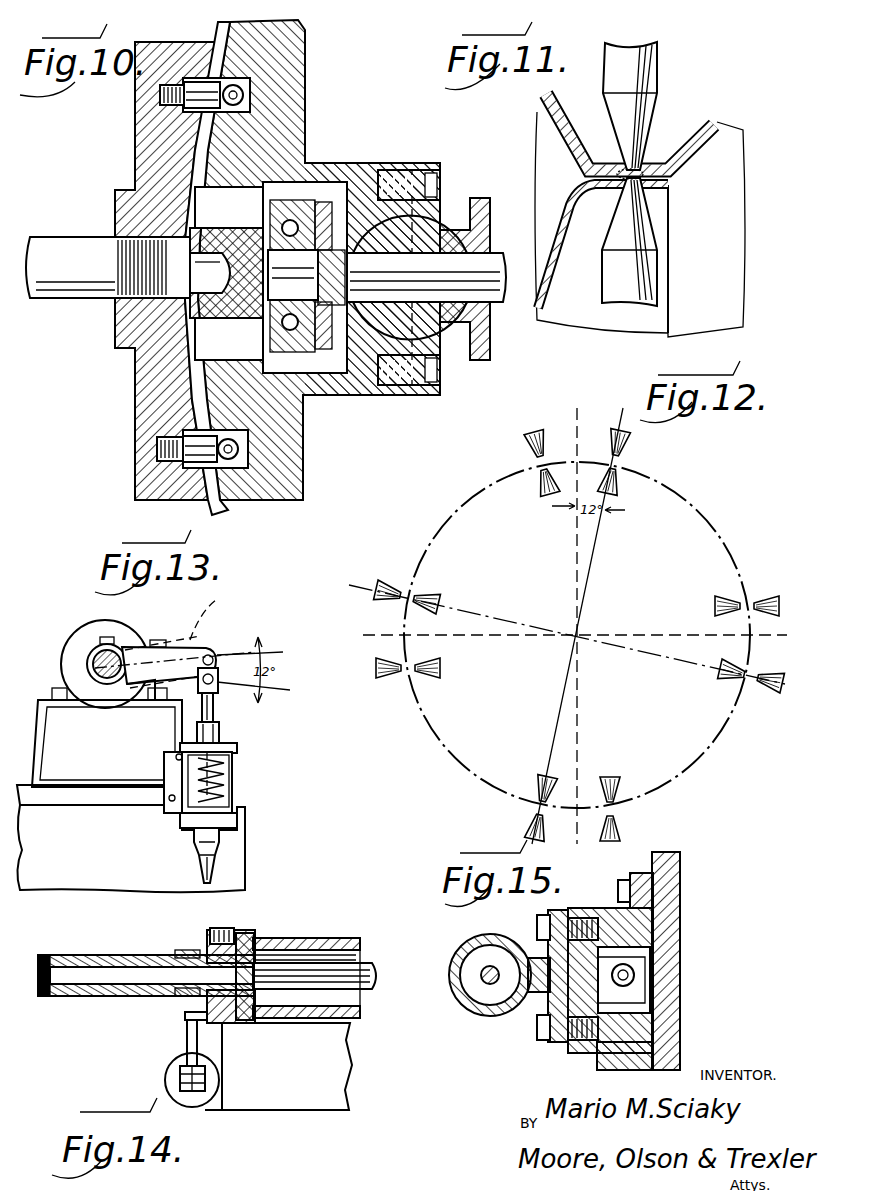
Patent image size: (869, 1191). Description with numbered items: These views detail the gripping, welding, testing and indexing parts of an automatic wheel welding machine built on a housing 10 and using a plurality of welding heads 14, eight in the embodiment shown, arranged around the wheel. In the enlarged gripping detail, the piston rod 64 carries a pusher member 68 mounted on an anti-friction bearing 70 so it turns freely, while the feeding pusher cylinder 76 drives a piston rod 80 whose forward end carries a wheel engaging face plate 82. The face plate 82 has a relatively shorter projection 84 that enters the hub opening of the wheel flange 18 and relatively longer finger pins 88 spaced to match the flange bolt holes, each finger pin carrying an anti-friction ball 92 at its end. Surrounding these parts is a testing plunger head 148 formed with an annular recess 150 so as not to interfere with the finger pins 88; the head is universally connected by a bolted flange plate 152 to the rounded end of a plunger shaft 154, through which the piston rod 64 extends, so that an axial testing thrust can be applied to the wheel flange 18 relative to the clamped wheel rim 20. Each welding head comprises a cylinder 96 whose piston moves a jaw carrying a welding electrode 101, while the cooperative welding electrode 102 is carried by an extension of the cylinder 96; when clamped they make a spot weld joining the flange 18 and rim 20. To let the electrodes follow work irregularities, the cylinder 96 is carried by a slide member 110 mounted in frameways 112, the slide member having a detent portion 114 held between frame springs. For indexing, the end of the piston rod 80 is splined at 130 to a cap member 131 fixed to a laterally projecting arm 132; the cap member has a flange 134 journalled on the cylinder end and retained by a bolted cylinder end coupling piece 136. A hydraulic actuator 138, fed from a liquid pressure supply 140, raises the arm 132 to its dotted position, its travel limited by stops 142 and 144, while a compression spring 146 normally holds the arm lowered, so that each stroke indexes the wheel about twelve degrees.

In FIG. 15, the housing 10 is at (665, 940).
In FIG. 12, the welding heads 14 is at (608, 430).
In FIG. 10, the wheel flange 18 is at (195, 152).
In FIG. 12, the wheel flange 18 is at (590, 377).
In FIG. 11, the wheel rim 20 is at (720, 130).
In FIG. 10, the piston rod 64 is at (495, 293).
In FIG. 10, the pusher member 68 is at (228, 246).
In FIG. 10, the anti-friction bearing 70 is at (303, 202).
In FIG. 13, the feeding pusher cylinder 76 is at (76, 648).
In FIG. 14, the feeding pusher cylinder 76 is at (346, 938).
In FIG. 10, the piston rod 80 is at (64, 240).
In FIG. 13, the piston rod 80 is at (90, 668).
In FIG. 14, the piston rod 80 is at (370, 976).
In FIG. 10, the wheel engaging face plate 82 is at (133, 397).
In FIG. 10, the projection 84 is at (195, 283).
In FIG. 10, the finger pins 88 is at (191, 84).
In FIG. 10, the anti-friction ball 92 is at (243, 92).
In FIG. 15, the cylinder 96 is at (470, 1012).
In FIG. 11, the welding electrode 101 is at (648, 73).
In FIG. 12, the welding electrode 101 is at (538, 463).
In FIG. 11, the welding electrode 102 is at (653, 238).
In FIG. 12, the welding electrode 102 is at (538, 474).
In FIG. 15, the slide member 110 is at (580, 1043).
In FIG. 15, the frameways 112 is at (593, 912).
In FIG. 15, the detent portion 114 is at (634, 976).
In FIG. 13, the spline 130 is at (100, 640).
In FIG. 14, the spline 130 is at (118, 993).
In FIG. 13, the cap member 131 is at (100, 692).
In FIG. 14, the cap member 131 is at (90, 957).
In FIG. 13, the arm 132 is at (190, 640).
In FIG. 14, the arm 132 is at (187, 1030).
In FIG. 14, the flange 134 is at (295, 938).
In FIG. 14, the cylinder end coupling piece 136 is at (212, 930).
In FIG. 13, the hydraulic actuator 138 is at (232, 766).
In FIG. 14, the hydraulic actuator 138 is at (172, 1080).
In FIG. 13, the source of liquid pressure supply 140 is at (213, 870).
In FIG. 13, the stop 142 is at (152, 700).
In FIG. 13, the stop 144 is at (158, 645).
In FIG. 14, the stop 144 is at (186, 1017).
In FIG. 13, the compression spring 146 is at (220, 780).
In FIG. 10, the testing plunger head 148 is at (292, 106).
In FIG. 10, the annular recess 150 is at (247, 132).
In FIG. 10, the bolted flange plate 152 is at (425, 165).
In FIG. 10, the plunger shaft 154 is at (487, 198).